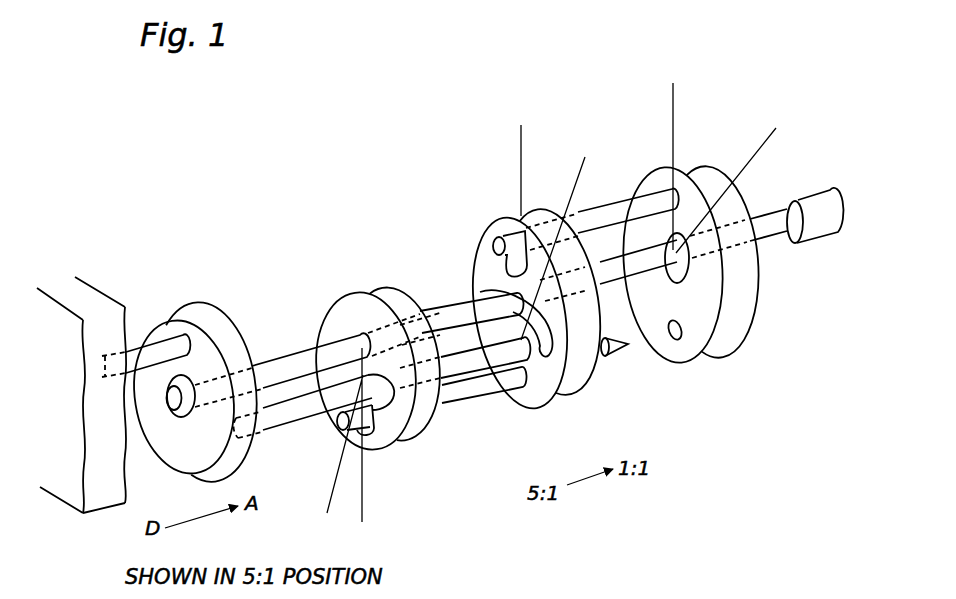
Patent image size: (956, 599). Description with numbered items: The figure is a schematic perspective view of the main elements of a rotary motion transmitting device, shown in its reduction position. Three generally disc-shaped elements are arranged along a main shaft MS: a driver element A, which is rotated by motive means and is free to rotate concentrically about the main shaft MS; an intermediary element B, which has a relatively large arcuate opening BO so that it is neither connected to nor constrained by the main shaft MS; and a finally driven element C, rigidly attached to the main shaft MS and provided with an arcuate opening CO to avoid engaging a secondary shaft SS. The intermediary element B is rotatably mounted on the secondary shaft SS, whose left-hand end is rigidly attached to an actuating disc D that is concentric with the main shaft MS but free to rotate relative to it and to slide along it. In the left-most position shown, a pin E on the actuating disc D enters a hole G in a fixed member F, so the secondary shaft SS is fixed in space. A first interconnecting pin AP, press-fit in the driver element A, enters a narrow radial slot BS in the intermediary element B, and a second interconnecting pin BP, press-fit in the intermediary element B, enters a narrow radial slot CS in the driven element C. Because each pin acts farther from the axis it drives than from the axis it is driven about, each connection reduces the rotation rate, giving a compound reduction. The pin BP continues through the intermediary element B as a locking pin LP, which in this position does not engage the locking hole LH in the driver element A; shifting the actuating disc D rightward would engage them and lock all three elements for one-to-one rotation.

The fixed member F is at (65, 480).
The hole G is at (100, 367).
The pin E is at (139, 352).
The actuating disc D is at (192, 300).
The main shaft MS is at (272, 367).
The radial slot CS is at (350, 433).
The arcuate opening CO is at (395, 436).
The finally driven element C is at (360, 290).
The second interconnecting pin BP is at (455, 397).
The secondary shaft SS is at (467, 360).
The intermediary element B is at (488, 227).
The radial slot BS is at (508, 263).
The arcuate opening BO is at (550, 355).
The first interconnecting pin AP is at (617, 212).
The driver element A is at (684, 250).
The locking hole LH is at (682, 332).
The locking pin LP is at (612, 357).